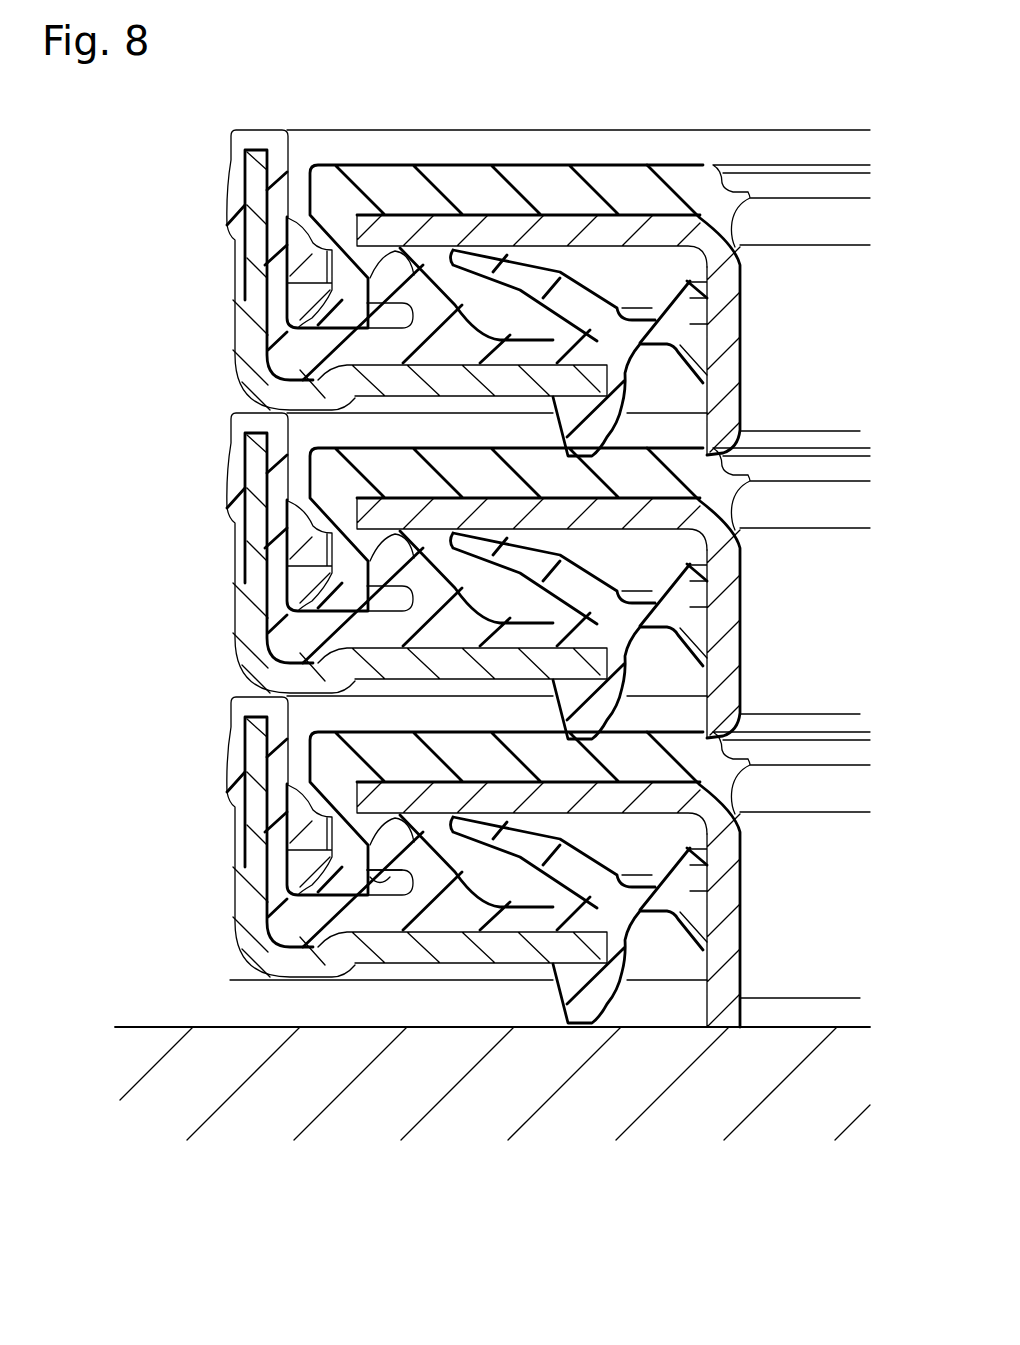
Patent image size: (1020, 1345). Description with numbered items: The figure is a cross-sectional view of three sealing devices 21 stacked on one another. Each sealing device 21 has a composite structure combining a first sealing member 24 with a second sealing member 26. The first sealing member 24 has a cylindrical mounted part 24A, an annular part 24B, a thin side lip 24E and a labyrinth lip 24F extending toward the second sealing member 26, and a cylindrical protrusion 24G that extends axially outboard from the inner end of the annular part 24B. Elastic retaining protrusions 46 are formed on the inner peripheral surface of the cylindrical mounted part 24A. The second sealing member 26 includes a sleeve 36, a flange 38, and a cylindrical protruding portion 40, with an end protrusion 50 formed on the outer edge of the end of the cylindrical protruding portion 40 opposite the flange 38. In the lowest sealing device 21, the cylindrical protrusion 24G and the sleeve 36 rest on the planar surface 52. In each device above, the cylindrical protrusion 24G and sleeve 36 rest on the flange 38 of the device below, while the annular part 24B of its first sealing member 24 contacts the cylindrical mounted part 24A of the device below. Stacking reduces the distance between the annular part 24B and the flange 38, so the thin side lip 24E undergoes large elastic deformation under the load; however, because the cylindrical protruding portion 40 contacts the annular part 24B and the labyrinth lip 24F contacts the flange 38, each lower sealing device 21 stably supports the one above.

The sealing device 21 is at (192, 311).
The first sealing member 24 is at (191, 198).
The cylindrical mounted part 24A is at (262, 577).
The annular part 24B is at (293, 655).
The side lip 24E is at (575, 862).
The labyrinth lip 24F is at (360, 877).
The cylindrical protrusion 24G is at (582, 1017).
The second sealing member 26 is at (755, 315).
The sleeve 36 is at (748, 925).
The flange 38 is at (348, 770).
The cylindrical protruding portion 40 is at (392, 848).
The retaining protrusions 46 is at (302, 808).
The end protrusion 50 is at (305, 893).
The planar surface 52 is at (235, 1027).